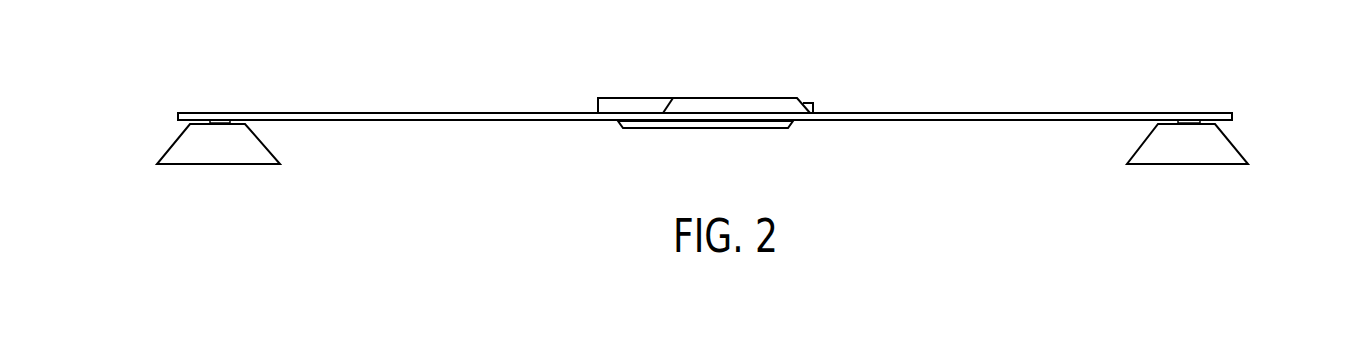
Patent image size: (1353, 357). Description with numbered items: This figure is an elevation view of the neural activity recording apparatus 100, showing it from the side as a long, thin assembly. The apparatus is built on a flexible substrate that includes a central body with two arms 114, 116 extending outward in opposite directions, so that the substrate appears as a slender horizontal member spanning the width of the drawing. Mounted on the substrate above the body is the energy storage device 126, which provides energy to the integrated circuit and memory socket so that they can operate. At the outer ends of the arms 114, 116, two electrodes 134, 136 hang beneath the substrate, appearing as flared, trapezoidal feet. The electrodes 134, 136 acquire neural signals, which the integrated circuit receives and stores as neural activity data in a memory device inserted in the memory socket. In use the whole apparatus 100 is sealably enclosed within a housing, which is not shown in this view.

The neural activity recording apparatus 100 is at (209, 78).
The arm 114 is at (448, 113).
The arm 116 is at (925, 113).
The energy storage device 126 is at (742, 105).
The electrode 134 is at (257, 153).
The electrode 136 is at (1225, 153).